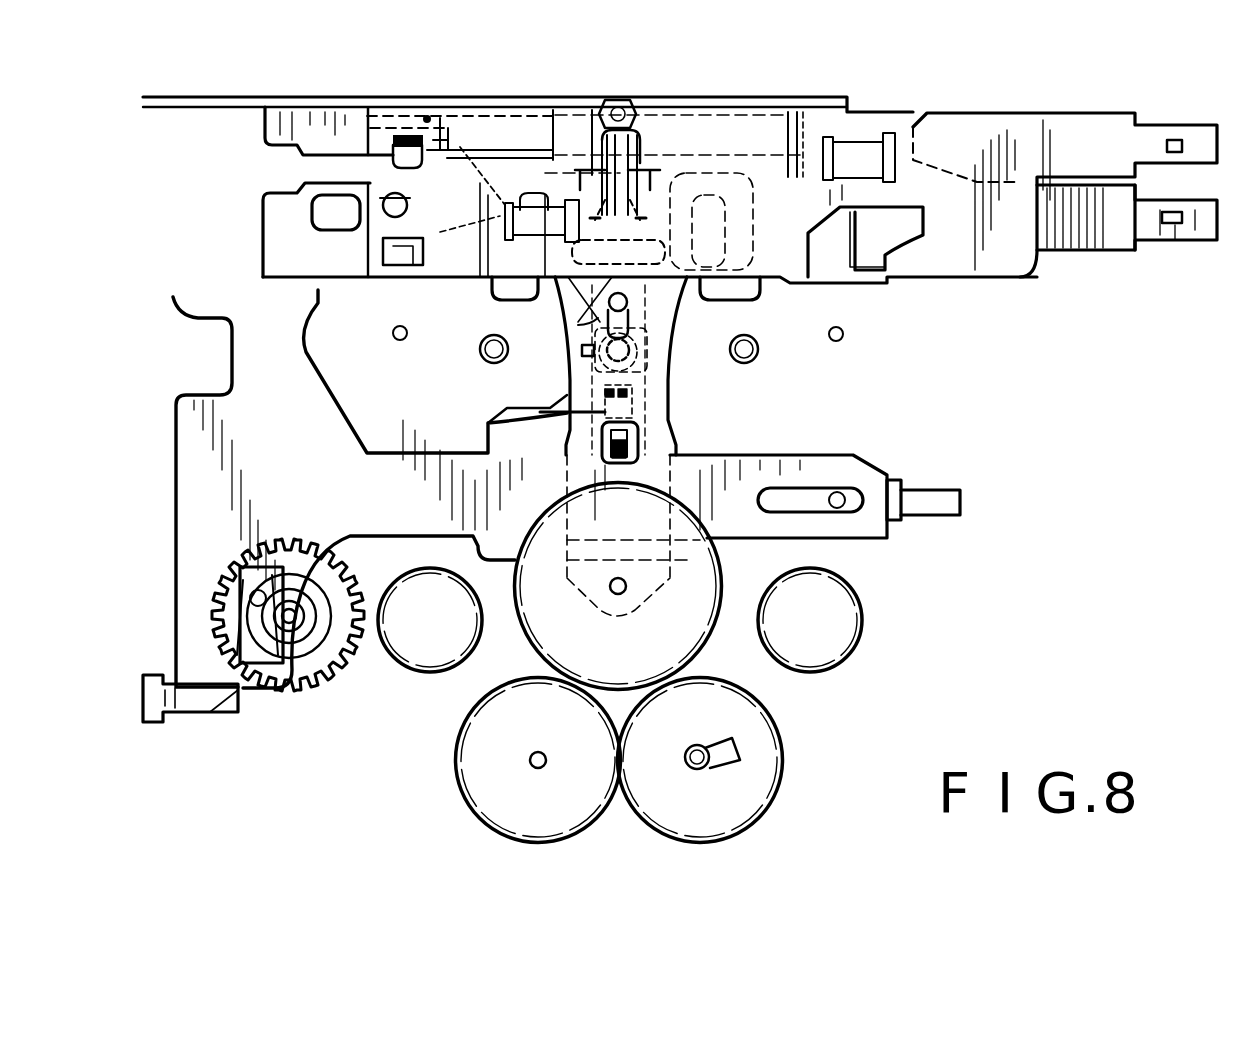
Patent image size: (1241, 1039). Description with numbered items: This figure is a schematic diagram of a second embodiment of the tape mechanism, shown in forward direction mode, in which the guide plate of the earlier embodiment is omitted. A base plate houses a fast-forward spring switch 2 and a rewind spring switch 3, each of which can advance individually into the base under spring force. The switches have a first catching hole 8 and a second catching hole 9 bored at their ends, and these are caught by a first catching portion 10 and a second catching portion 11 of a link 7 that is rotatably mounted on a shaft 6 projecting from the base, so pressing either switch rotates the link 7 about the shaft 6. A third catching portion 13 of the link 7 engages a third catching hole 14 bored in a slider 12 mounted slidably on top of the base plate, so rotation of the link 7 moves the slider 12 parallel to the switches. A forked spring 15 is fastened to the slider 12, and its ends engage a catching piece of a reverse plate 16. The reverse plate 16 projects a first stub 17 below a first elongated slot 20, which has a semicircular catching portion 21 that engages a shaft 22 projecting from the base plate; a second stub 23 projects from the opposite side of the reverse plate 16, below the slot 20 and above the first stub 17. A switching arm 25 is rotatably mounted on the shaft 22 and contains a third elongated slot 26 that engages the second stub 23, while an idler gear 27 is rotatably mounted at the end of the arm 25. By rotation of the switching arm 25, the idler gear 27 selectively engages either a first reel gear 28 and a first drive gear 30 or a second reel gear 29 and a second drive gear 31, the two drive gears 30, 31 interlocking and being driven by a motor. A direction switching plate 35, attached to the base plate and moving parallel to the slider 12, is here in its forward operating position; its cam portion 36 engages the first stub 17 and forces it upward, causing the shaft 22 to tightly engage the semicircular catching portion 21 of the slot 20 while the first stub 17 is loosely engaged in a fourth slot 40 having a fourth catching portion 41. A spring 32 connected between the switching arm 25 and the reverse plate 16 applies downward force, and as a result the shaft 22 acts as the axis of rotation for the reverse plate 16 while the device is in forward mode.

The fast-forward spring switch 2 is at (1030, 125).
The rewind spring switch 3 is at (1068, 250).
The shaft 6 is at (335, 192).
The link 7 is at (460, 147).
The first catching hole 8 is at (395, 268).
The second catching hole 9 is at (390, 158).
The first catching portion 10 is at (395, 232).
The second catching portion 11 is at (428, 118).
The slider 12 is at (592, 105).
The third catching portion 13 is at (405, 136).
The third catching hole 14 is at (402, 122).
The forked spring 15 is at (640, 152).
The reverse plate 16 is at (655, 320).
The first stub 17 is at (645, 385).
The first elongated slot 20 is at (510, 287).
The semicircular catching portion 21 is at (580, 322).
The shaft 22 is at (592, 285).
The second stub 23 is at (700, 300).
The switching arm 25 is at (695, 475).
The third elongated slot 26 is at (650, 355).
The idler gear 27 is at (715, 640).
The first reel gear 28 is at (425, 672).
The second reel gear 29 is at (868, 642).
The first drive gear 30 is at (578, 845).
The second drive gear 31 is at (735, 845).
The spring 32 is at (505, 410).
The direction switching plate 35 is at (178, 503).
The cam portion 36 is at (585, 368).
The fourth slot 40 is at (585, 348).
The fourth catching portion 41 is at (650, 420).